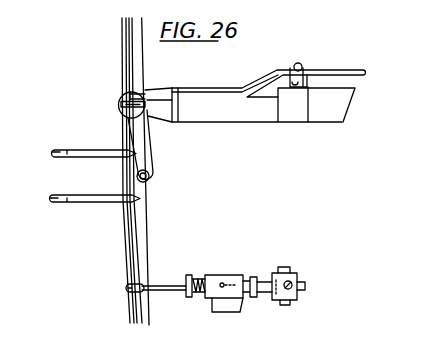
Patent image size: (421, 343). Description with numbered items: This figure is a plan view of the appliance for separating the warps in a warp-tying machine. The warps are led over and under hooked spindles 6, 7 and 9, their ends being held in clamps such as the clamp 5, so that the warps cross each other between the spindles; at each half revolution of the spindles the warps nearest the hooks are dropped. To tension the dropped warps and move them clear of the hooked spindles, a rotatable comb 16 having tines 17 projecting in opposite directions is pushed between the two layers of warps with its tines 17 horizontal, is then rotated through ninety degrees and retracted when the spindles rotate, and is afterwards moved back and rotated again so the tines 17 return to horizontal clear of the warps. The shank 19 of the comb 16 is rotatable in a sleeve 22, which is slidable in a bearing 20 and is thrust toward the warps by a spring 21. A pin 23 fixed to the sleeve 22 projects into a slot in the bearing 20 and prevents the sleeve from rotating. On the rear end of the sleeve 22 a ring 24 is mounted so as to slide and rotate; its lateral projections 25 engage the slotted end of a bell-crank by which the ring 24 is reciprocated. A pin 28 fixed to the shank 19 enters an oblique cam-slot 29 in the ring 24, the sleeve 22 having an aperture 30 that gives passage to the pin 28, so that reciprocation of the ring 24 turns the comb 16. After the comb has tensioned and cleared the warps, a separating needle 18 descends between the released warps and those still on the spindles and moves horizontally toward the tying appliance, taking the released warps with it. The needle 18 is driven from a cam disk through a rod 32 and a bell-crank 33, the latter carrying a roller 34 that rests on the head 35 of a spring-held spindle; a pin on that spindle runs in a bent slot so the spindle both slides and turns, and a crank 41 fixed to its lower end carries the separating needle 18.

The clamp 5 is at (54, 202).
The spindle 6 is at (83, 202).
The spindle 7 is at (77, 150).
The spindle 9 is at (55, 151).
The rotatable comb 16 is at (148, 294).
The tines 17 is at (130, 288).
The separating needle 18 is at (150, 176).
The shank 19 is at (158, 286).
The bearing 20 is at (227, 303).
The spring 21 is at (200, 277).
The sleeve 22 is at (254, 277).
The pin 23 is at (223, 283).
The ring 24 is at (272, 288).
The lateral projections 25 is at (290, 268).
The pin 28 is at (291, 291).
The oblique cam-slot 29 is at (292, 284).
The aperture 30 is at (305, 293).
The rod 32 is at (336, 72).
The bell-crank 33 is at (245, 93).
The roller 34 is at (118, 107).
The head 35 is at (118, 94).
The crank 41 is at (146, 142).